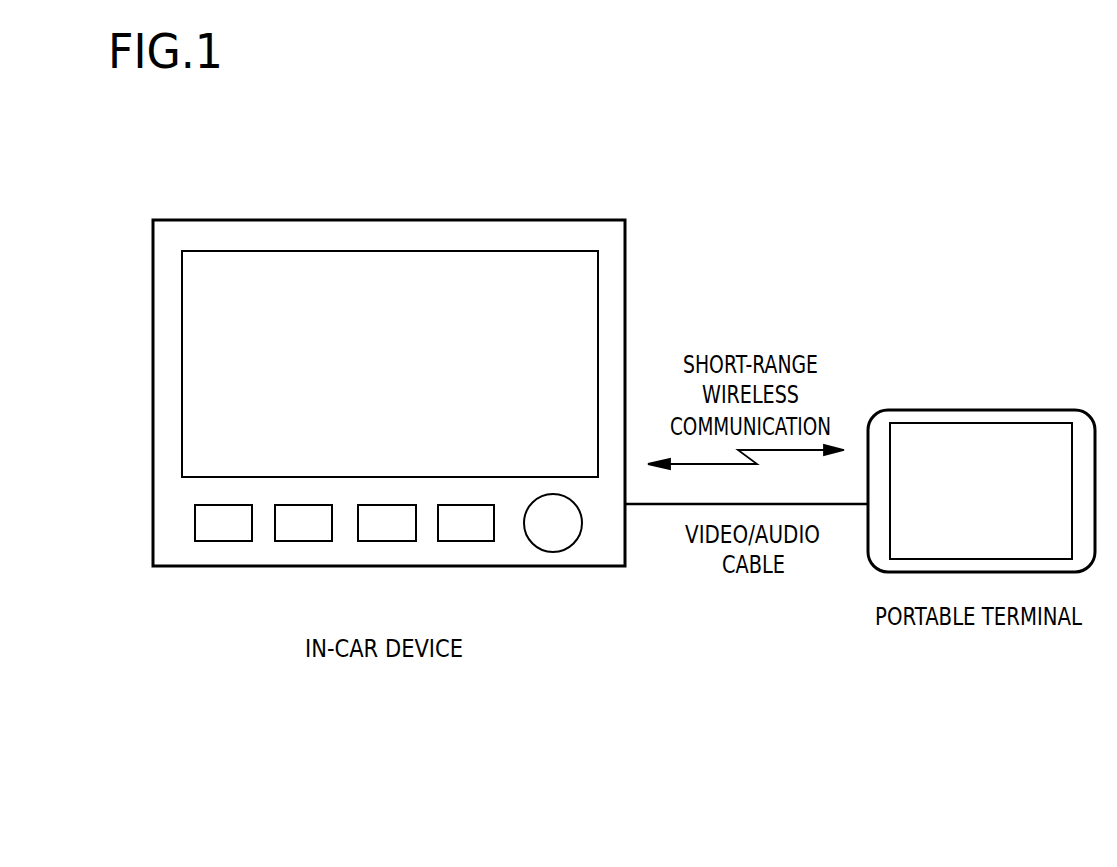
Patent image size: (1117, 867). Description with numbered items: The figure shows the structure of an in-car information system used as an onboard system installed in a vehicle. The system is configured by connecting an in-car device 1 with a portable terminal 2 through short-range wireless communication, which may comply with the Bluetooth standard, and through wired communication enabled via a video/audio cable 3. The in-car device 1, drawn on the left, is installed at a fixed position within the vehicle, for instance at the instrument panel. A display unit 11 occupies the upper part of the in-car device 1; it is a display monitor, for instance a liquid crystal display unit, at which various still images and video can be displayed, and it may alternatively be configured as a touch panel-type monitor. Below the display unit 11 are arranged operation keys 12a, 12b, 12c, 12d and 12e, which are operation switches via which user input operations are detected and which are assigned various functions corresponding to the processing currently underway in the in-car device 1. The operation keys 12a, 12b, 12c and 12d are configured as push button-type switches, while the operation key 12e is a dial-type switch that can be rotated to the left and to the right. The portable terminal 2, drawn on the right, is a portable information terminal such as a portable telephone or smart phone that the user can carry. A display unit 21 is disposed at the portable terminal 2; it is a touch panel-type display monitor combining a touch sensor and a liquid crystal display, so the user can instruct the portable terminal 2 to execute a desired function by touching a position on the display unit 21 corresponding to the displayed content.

The in-car device 1 is at (197, 225).
The display unit 11 is at (567, 258).
The operation key 12a is at (222, 541).
The operation key 12b is at (302, 541).
The operation key 12c is at (385, 541).
The operation key 12d is at (464, 541).
The operation key 12e is at (553, 549).
The portable terminal 2 is at (910, 412).
The display unit 21 is at (1038, 425).
The video/audio cable 3 is at (647, 505).